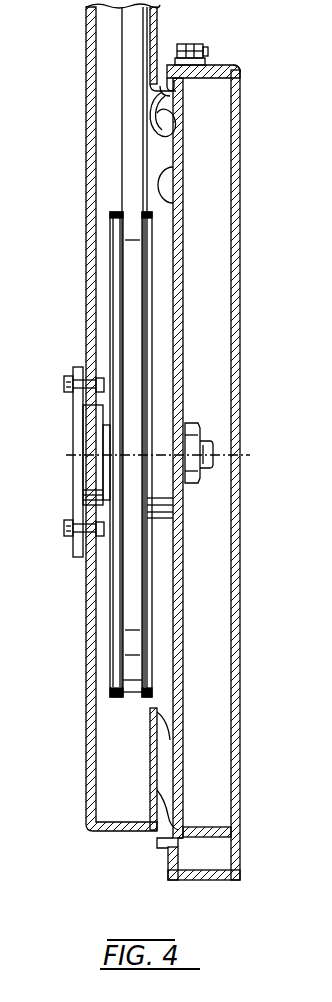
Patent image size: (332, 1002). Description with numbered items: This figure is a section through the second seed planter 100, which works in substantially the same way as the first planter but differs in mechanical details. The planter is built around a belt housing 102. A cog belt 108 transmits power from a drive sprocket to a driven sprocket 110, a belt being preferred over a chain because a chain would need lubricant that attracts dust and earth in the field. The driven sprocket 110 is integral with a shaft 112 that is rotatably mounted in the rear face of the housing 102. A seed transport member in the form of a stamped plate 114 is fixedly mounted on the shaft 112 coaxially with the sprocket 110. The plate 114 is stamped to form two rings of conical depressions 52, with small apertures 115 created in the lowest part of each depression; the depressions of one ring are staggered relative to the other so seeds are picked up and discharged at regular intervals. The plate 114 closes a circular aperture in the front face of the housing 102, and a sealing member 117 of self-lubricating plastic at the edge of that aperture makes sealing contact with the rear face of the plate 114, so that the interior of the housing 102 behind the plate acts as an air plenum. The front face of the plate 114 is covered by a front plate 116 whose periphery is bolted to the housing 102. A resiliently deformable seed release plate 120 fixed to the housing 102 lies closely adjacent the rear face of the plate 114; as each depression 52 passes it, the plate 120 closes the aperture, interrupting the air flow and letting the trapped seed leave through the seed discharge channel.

The second planter 100 is at (240, 57).
The belt housing 102 is at (85, 649).
The cog belt 108 is at (110, 143).
The driven sprocket 110 is at (143, 482).
The shaft 112 is at (110, 447).
The stamped plate 114 is at (182, 268).
The small apertures 115 is at (177, 142).
The front plate 116 is at (236, 405).
The sealing member 117 is at (160, 63).
The seed release plate 120 is at (145, 785).
The conical depressions 52 is at (176, 106).